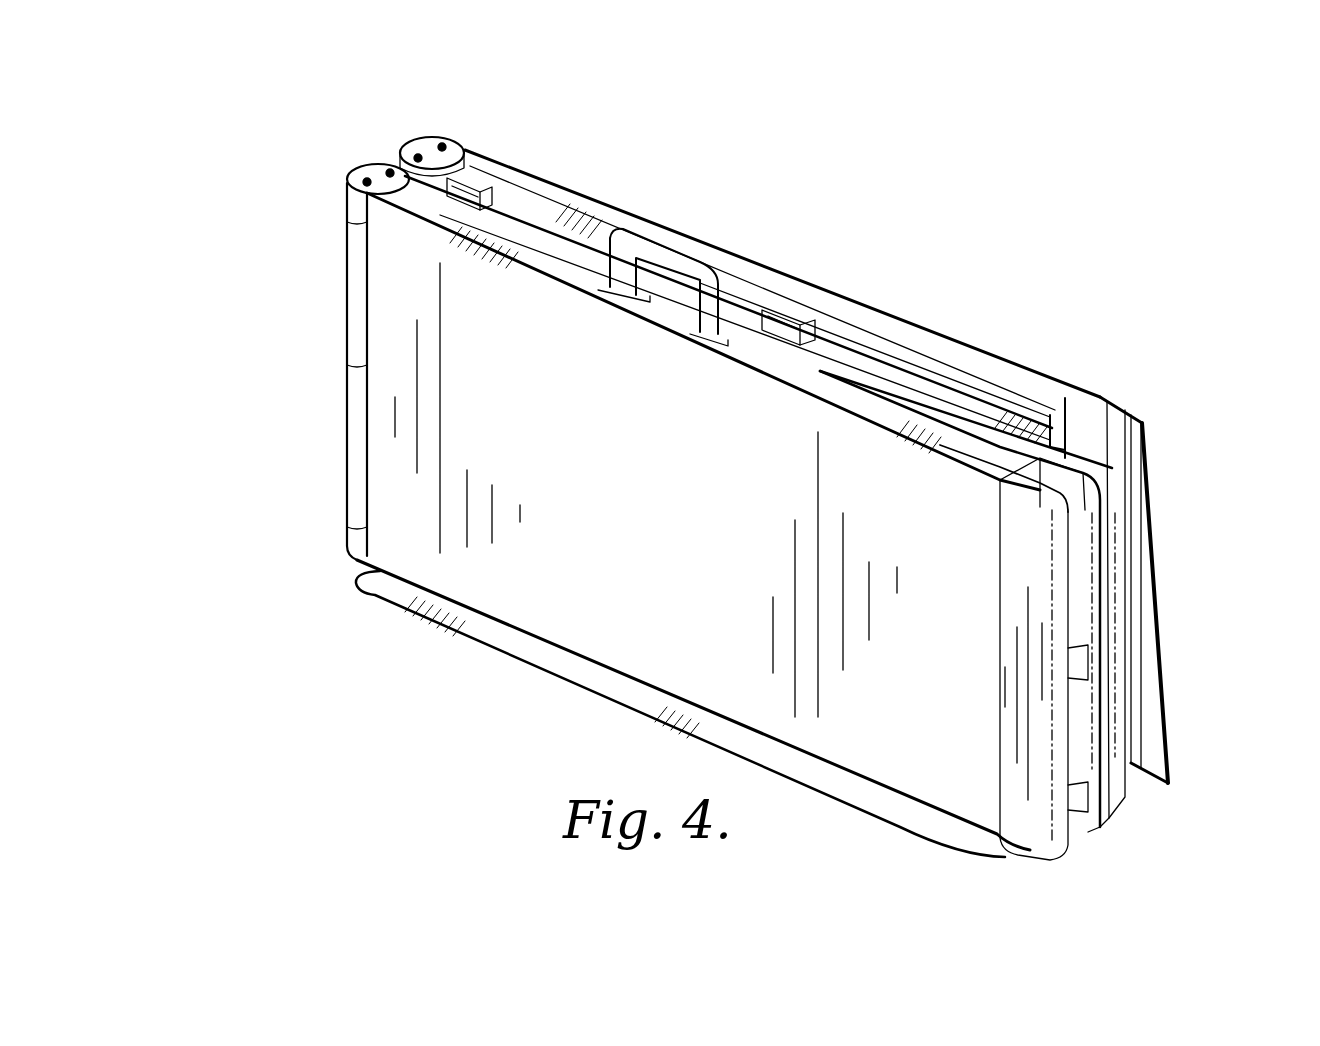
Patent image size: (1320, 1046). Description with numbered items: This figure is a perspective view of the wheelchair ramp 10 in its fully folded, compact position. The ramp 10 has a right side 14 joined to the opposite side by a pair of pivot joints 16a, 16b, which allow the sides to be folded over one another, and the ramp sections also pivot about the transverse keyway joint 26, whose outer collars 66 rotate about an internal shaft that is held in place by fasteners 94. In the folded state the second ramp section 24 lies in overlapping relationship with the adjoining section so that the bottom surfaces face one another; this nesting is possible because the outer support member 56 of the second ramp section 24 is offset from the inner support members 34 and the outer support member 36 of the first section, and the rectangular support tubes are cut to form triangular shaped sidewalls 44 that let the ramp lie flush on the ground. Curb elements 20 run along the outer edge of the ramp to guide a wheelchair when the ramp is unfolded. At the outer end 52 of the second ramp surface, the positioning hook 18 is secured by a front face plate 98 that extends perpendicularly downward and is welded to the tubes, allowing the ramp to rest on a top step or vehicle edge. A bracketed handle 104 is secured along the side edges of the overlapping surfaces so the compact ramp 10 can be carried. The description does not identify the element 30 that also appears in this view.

The wheelchair ramp 10 is at (337, 732).
The right side 14 is at (600, 700).
The pivot joint 16a is at (798, 313).
The pivot joint 16b is at (490, 158).
The positioning hook 18 is at (1157, 530).
The curb elements 20 is at (843, 790).
The second ramp section 24 is at (750, 527).
The keyway joint 26 is at (330, 380).
The slats 30 is at (1110, 817).
The inner support members 34 is at (993, 390).
The outer support member 36 is at (525, 242).
The triangular shaped sidewalls 44 is at (927, 390).
The outer end 52 is at (998, 780).
The outer support member 56 is at (598, 230).
The outer collars 66 is at (345, 190).
The fasteners 94 is at (368, 180).
The front face plate 98 is at (443, 150).
The bracketed handle 104 is at (660, 253).